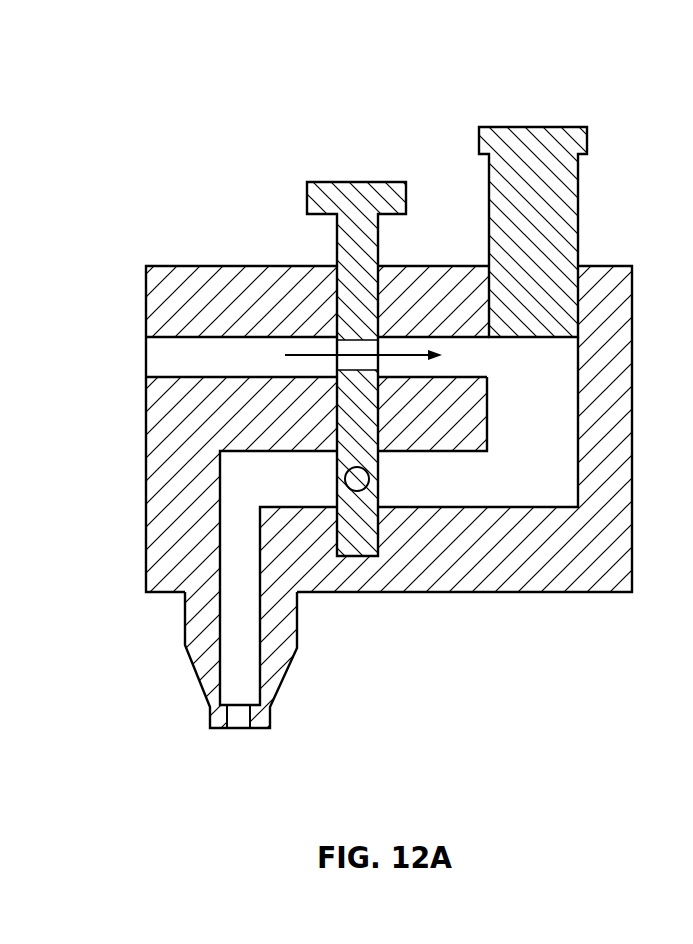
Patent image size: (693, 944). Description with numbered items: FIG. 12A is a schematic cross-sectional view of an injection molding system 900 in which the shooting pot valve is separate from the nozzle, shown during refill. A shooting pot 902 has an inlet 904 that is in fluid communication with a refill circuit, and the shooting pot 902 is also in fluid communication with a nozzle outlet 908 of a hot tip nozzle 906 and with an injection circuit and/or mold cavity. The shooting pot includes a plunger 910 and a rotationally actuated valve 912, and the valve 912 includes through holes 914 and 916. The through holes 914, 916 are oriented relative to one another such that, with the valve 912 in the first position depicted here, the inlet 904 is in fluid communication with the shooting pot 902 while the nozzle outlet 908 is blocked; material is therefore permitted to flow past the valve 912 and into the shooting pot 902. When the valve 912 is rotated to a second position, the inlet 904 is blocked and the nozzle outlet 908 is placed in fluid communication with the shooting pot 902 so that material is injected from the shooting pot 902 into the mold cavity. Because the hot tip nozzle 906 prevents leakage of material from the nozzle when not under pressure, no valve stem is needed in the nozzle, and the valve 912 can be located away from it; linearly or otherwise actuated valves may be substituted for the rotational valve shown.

The injection molding system 900 is at (259, 102).
The shooting pot 902 is at (531, 473).
The inlet 904 is at (146, 357).
The hot tip nozzle 906 is at (298, 648).
The nozzle outlet 908 is at (243, 722).
The plunger 910 is at (535, 127).
The rotationally actuated valve 912 is at (355, 182).
The through hole 914 is at (355, 352).
The through hole 916 is at (357, 481).